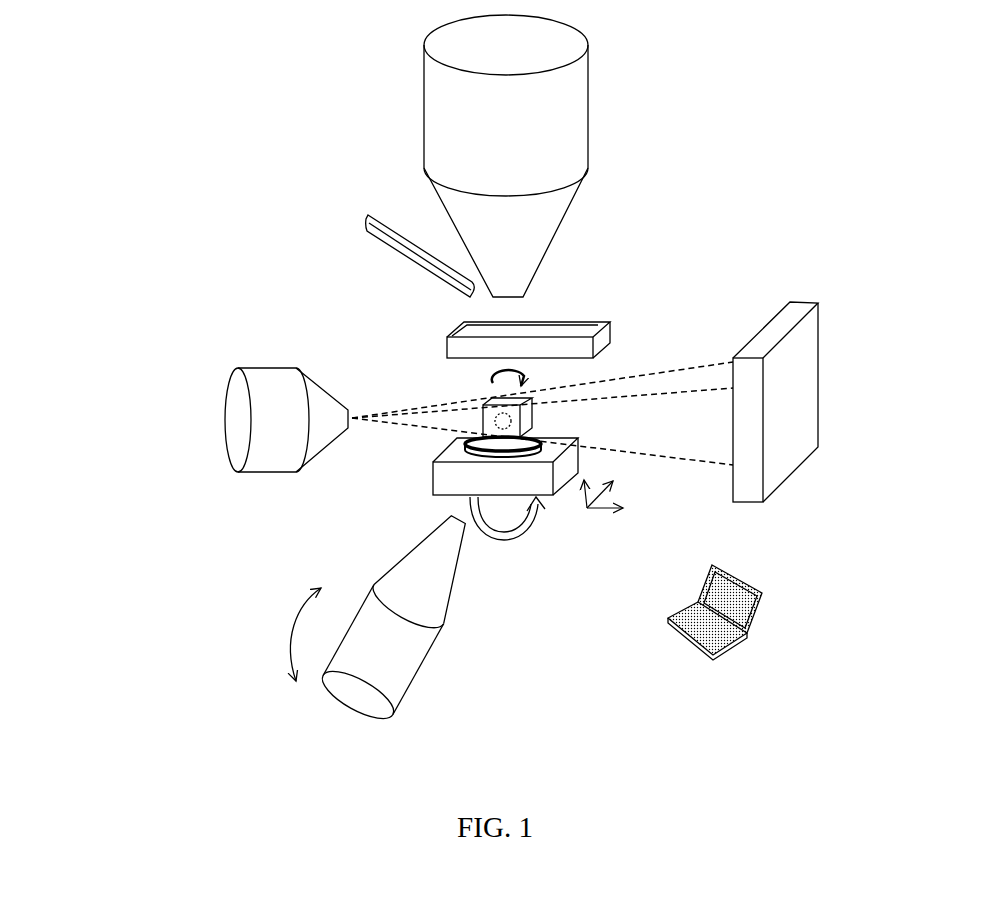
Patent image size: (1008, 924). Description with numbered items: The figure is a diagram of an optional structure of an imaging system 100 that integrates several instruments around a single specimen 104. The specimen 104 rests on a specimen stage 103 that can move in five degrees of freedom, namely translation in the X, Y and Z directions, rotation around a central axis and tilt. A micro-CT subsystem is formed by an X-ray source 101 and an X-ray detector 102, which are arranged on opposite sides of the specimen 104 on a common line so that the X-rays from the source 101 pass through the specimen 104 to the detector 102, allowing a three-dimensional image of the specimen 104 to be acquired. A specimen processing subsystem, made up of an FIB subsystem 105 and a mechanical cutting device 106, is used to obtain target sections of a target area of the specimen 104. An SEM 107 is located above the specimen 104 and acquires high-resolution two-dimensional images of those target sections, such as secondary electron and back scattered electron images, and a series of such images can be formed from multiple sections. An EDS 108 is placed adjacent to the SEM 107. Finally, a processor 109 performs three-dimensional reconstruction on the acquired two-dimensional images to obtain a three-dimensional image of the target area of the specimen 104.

The imaging system 100 is at (696, 46).
The X-ray source 101 is at (263, 362).
The X-ray detector 102 is at (810, 298).
The specimen stage 103 is at (508, 484).
The specimen 104 is at (537, 415).
The FIB subsystem 105 is at (445, 645).
The mechanical cutting device 106 is at (586, 313).
The SEM 107 is at (599, 165).
The EDS 108 is at (412, 265).
The processor 109 is at (764, 620).